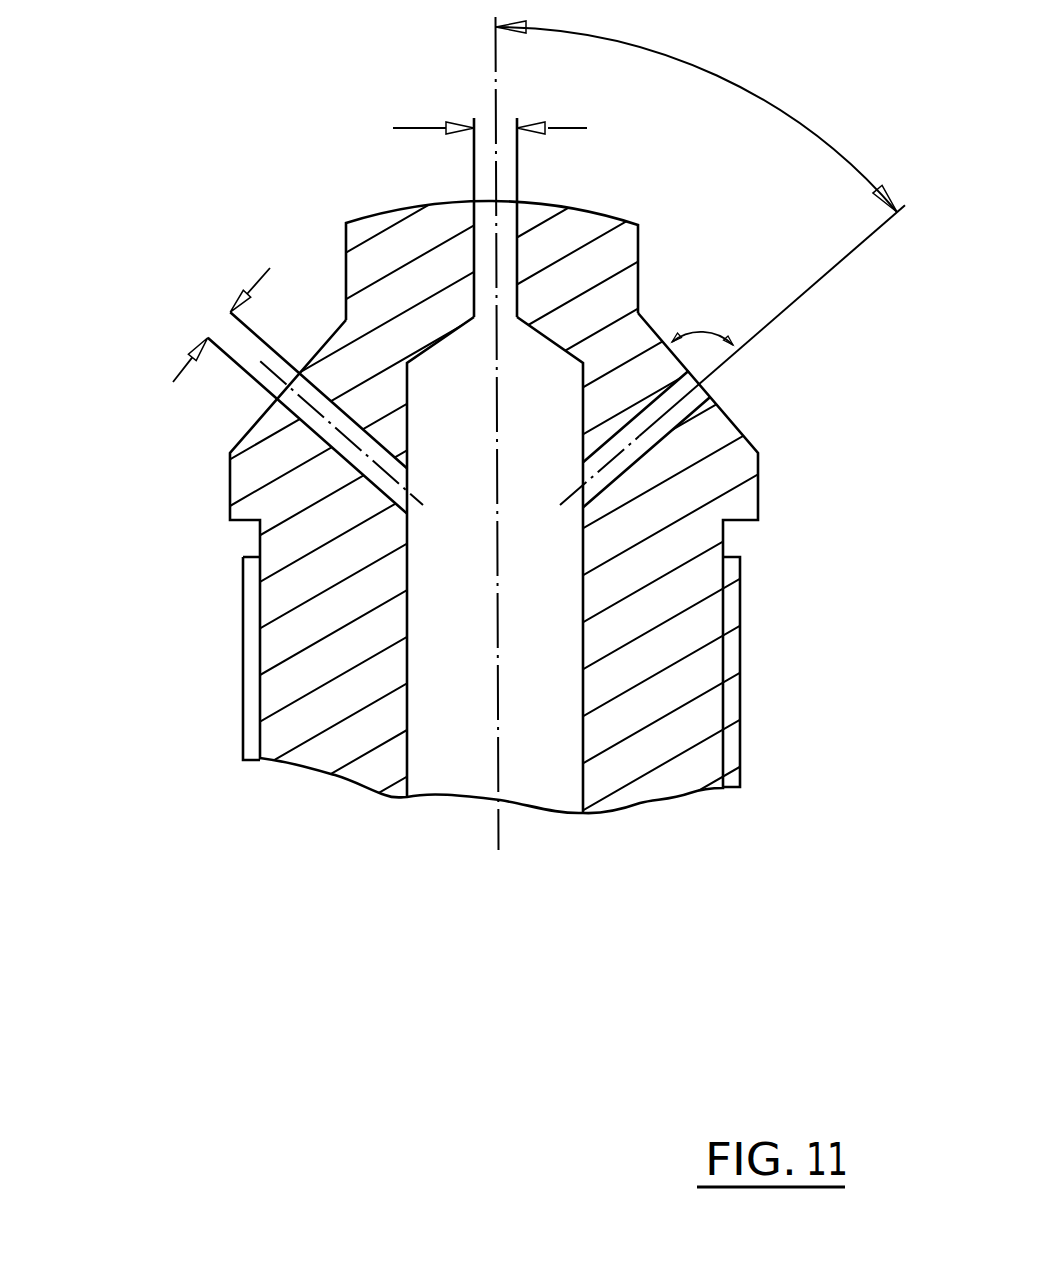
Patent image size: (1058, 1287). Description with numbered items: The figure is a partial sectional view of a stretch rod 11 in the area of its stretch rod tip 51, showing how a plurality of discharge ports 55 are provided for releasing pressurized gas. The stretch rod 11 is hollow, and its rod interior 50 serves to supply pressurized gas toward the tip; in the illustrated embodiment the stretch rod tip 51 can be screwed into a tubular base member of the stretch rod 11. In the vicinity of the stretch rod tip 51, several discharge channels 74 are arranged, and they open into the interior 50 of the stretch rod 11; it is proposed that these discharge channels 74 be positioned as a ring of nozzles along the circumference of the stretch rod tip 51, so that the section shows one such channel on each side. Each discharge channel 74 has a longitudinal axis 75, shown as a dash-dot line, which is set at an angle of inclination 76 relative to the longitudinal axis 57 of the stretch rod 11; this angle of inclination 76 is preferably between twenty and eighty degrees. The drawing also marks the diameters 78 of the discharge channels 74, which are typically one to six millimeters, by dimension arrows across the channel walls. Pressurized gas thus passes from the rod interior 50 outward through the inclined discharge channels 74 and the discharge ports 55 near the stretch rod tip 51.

The stretch rod 11 is at (660, 735).
The rod interior 50 is at (465, 705).
The stretch rod tip 51 is at (383, 258).
The discharge ports 55 is at (698, 390).
The longitudinal axis of the stretch rod 57 is at (500, 830).
The discharge channels 74 is at (643, 447).
The longitudinal axes of the discharge channels 75 is at (672, 413).
The angle of inclination 76 is at (755, 90).
The diameters of the discharge channels 78 is at (228, 316).